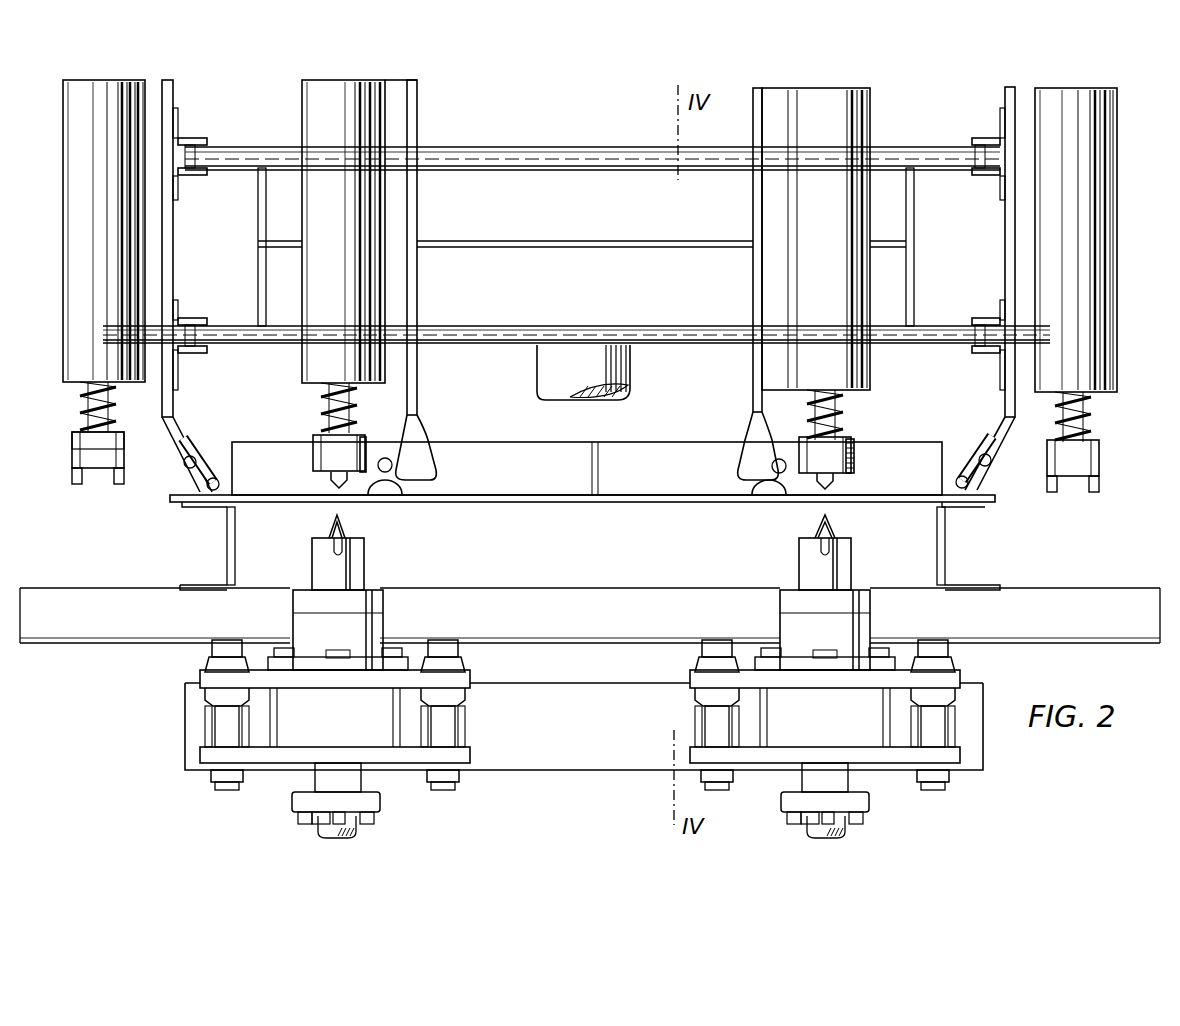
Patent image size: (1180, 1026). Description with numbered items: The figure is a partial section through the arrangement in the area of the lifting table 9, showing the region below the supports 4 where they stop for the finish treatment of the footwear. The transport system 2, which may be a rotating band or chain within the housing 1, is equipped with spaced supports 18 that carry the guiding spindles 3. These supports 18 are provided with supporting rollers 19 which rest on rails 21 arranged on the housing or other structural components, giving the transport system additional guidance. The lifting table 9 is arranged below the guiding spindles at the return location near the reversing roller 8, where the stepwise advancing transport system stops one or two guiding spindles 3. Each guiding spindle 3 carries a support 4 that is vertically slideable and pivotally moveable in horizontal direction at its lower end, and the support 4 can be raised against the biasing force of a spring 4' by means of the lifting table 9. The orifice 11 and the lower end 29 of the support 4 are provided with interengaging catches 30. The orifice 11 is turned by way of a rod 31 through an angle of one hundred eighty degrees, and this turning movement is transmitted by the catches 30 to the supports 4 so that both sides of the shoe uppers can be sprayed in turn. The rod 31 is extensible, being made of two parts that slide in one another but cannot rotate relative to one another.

The housing 1 is at (122, 628).
The transport system 2 is at (195, 140).
The guiding spindle 3 is at (80, 168).
The support 4 is at (600, 440).
The spring 4' is at (588, 412).
The reversing roller 8 is at (672, 324).
The lifting table 9 is at (535, 770).
The orifice 11 is at (354, 572).
The support 18 is at (176, 258).
The supporting roller 19 is at (200, 440).
The rail 21 is at (576, 488).
The lower end of the support 29 is at (330, 446).
The catch 30 is at (332, 492).
The rod 31 is at (346, 832).